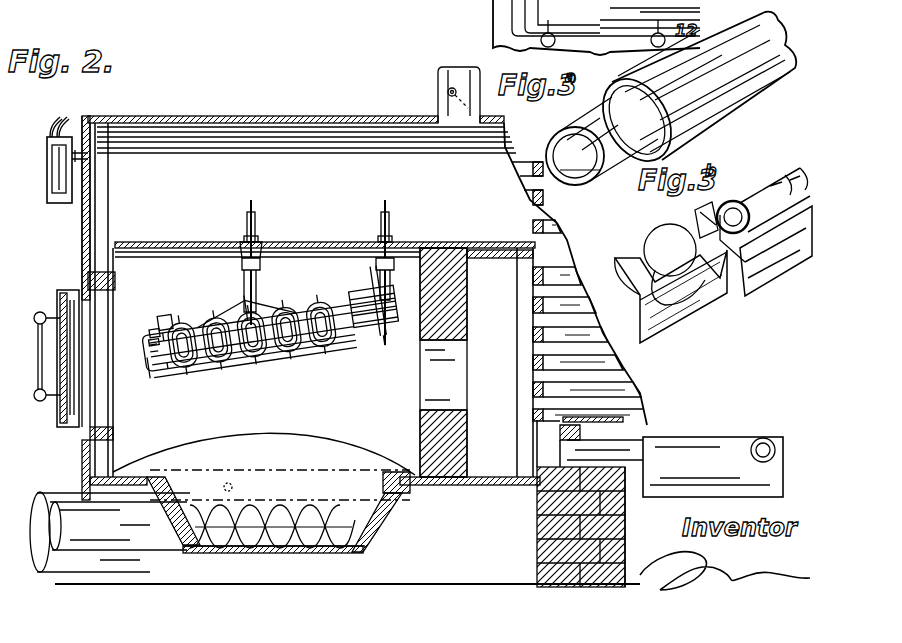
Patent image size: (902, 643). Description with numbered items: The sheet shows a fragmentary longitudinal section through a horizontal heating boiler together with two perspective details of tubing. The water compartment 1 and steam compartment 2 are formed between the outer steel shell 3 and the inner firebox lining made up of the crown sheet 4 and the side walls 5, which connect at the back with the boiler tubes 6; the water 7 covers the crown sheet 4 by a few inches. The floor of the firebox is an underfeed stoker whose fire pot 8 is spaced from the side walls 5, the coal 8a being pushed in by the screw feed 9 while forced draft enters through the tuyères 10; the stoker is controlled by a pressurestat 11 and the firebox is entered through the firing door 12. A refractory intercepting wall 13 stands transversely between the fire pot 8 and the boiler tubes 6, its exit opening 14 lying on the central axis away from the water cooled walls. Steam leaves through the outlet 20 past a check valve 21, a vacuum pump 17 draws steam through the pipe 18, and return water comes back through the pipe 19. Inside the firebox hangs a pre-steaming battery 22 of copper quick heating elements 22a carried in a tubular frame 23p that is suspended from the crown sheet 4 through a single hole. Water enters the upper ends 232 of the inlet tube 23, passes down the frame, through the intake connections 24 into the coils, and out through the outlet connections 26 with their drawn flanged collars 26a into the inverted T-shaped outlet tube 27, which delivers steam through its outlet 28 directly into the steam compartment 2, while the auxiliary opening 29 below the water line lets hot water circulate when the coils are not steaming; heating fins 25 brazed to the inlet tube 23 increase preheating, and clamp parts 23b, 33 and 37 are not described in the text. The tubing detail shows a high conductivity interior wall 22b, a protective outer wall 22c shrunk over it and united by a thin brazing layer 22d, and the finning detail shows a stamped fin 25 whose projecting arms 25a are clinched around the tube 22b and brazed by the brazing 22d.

In FIG. 2, the water compartment 1 is at (228, 613).
In FIG. 2, the steam compartment 2 is at (222, 0).
In FIG. 2, the outer steel shell 3 is at (202, 116).
In FIG. 2, the crown sheet 4 is at (170, 220).
In FIG. 2, the side walls 5 is at (115, 281).
In FIG. 2, the boiler tubes 6 is at (600, 368).
In FIG. 2, the water 7 is at (316, 215).
In FIG. 2, the fire pot 8 is at (368, 517).
In FIG. 2, the coal 8a is at (345, 447).
In FIG. 2, the screw feed 9 is at (330, 545).
In FIG. 2, the tuyères 10 is at (170, 480).
In FIG. 2, the pressurestat 11 is at (52, 203).
In FIG. 2, the firing door 12 is at (66, 425).
In FIG. 2, the intercepting wall 13 is at (468, 302).
In FIG. 2, the exit opening 14 is at (464, 368).
In FIG. 2, the vacuum pump 17 is at (661, 497).
In FIG. 2, the pipe 18 is at (768, 442).
In FIG. 2, the return pipe 19 is at (648, 440).
In FIG. 2, the outlet 20 is at (437, 97).
In FIG. 2, the check valve 21 is at (445, 88).
In FIG. 2, the pre-steaming battery 22 is at (326, 370).
In FIG. 2, the quick heating element 22a is at (355, 290).
In FIG. 3A, the interior wall 22b is at (552, 136).
In FIG. 3B, the interior wall 22b is at (740, 200).
In FIG. 3A, the outer wall 22c is at (765, 85).
In FIG. 3A, the brazing layer 22d is at (682, 117).
In FIG. 3B, the brazing layer 22d is at (806, 172).
In FIG. 2, the inlet tube 23 is at (250, 305).
In FIG. 2, the clamp 23b is at (160, 340).
In FIG. 2, the tubular frame 23p is at (150, 350).
In FIG. 2, the upper ends of inlet tube 232 is at (432, 200).
In FIG. 2, the intake connection 24 is at (388, 330).
In FIG. 2, the heating fin 25 is at (150, 360).
In FIG. 3B, the heating fin 25 is at (686, 315).
In FIG. 3B, the projecting arms 25a is at (697, 215).
In FIG. 2, the outlet connection 26 is at (372, 312).
In FIG. 2, the drawn flanged collar 26a is at (192, 332).
In FIG. 2, the outlet tube 27 is at (246, 218).
In FIG. 2, the steam outlet 28 is at (257, 212).
In FIG. 2, the auxiliary water opening 29 is at (270, 238).
In FIG. 2, the clamp block 33 is at (258, 268).
In FIG. 2, the bracket 37 is at (245, 236).